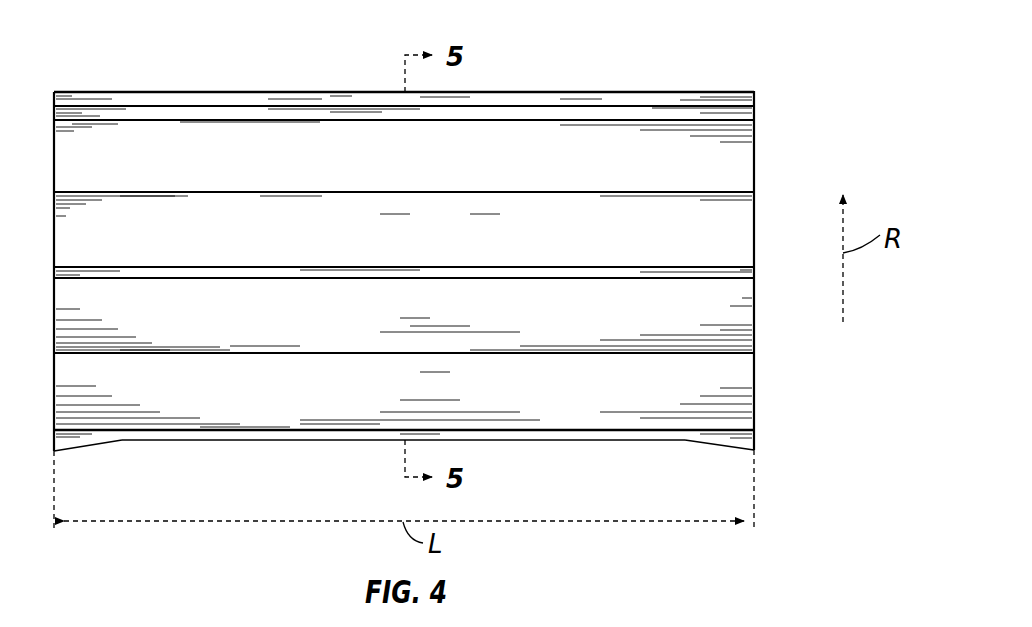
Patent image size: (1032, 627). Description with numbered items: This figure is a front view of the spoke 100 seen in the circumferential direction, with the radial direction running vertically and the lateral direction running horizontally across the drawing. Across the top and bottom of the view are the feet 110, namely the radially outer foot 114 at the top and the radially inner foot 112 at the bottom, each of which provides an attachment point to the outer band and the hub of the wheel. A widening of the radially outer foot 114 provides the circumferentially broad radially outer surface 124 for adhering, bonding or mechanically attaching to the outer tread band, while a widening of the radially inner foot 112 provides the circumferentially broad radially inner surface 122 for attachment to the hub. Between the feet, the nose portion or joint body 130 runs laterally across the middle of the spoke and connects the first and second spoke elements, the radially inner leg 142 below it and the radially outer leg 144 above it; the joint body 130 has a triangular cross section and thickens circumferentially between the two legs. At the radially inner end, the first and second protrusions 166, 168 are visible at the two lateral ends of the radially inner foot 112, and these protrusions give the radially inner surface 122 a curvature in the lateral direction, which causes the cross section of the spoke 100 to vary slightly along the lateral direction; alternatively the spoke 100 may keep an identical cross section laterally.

The spoke 100 is at (438, 265).
The feet 110 is at (438, 286).
The radially inner foot 112 is at (512, 433).
The radially outer foot 114 is at (105, 112).
The radially inner surface 122 is at (260, 440).
The radially outer surface 124 is at (147, 92).
The joint body 130 is at (742, 289).
The radially inner leg 142 is at (742, 365).
The radially outer leg 144 is at (740, 177).
The first protrusion 166 is at (743, 437).
The second protrusion 168 is at (80, 438).